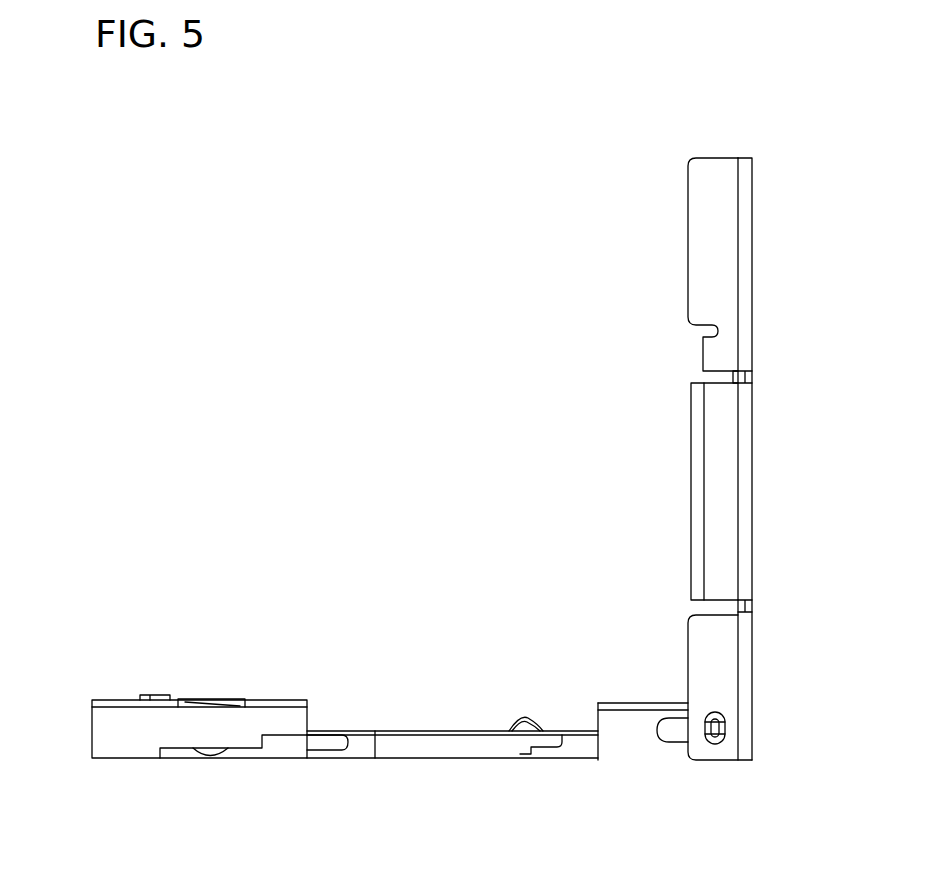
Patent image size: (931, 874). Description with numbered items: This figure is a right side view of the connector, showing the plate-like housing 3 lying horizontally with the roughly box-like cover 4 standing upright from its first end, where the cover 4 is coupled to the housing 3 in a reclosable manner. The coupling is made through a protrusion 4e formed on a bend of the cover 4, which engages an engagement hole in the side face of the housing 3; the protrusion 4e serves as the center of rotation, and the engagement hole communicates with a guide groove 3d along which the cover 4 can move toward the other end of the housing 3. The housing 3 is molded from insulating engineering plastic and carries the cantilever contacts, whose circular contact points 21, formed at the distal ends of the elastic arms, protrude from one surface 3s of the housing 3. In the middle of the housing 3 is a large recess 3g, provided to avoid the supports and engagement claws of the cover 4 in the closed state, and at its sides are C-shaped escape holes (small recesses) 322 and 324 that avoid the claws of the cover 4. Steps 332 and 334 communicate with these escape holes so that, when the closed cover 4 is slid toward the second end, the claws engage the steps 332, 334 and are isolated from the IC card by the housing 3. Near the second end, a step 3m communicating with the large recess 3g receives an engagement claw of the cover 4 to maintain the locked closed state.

The cover 4 is at (767, 228).
The protrusion 4e is at (719, 727).
The housing 3 is at (91, 732).
The step 3m is at (282, 742).
The large recess 3g is at (425, 748).
The one surface of the housing 3s is at (428, 732).
The step 334 is at (323, 750).
The escape hole (small recess) 324 is at (363, 745).
The step 332 is at (548, 753).
The contact point 21 is at (522, 720).
The escape hole (small recess) 322 is at (585, 733).
The guide groove 3d is at (677, 727).